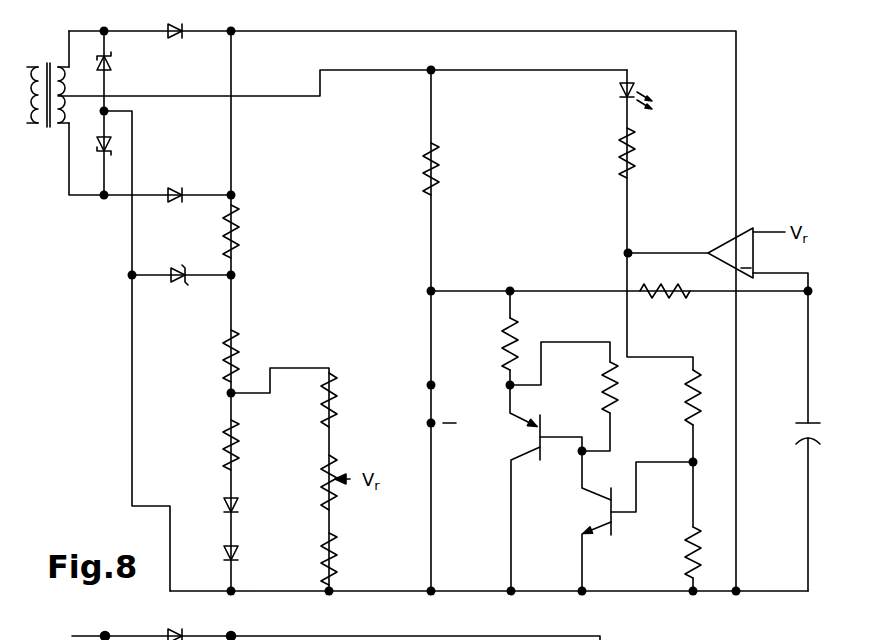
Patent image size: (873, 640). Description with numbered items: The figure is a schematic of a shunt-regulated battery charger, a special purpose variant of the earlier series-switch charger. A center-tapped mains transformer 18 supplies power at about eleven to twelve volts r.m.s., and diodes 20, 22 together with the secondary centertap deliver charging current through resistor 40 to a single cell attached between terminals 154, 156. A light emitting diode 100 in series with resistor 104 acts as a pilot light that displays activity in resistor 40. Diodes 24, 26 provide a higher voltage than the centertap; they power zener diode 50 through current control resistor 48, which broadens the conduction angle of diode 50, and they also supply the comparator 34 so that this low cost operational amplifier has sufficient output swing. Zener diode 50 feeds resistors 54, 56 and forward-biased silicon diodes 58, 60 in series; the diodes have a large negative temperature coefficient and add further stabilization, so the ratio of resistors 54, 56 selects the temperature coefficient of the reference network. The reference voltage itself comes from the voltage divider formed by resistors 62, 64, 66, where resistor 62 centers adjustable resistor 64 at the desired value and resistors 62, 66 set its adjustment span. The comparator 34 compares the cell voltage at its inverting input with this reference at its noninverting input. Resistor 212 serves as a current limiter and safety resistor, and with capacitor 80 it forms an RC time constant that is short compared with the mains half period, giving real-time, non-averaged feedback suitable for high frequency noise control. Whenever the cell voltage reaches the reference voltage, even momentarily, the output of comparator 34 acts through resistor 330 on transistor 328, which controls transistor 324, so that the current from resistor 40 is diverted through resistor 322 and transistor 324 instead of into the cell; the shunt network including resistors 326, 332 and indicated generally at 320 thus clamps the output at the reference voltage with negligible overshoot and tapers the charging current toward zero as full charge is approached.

The mains transformer 18 is at (50, 130).
The diode 20 is at (115, 63).
The diode 22 is at (99, 151).
The diode 24 is at (178, 38).
The diode 26 is at (177, 203).
The comparator 34 is at (712, 252).
The resistor 40 is at (423, 176).
The current control resistor 48 is at (244, 224).
The zener diode 50 is at (178, 283).
The resistor 54 is at (228, 350).
The resistor 56 is at (225, 441).
The diode 58 is at (223, 511).
The diode 60 is at (222, 557).
The resistor 62 is at (340, 400).
The resistor 64 is at (323, 464).
The resistor 66 is at (325, 537).
The capacitor 80 is at (803, 420).
The light emitting diode 100 is at (617, 95).
The resistor 104 is at (620, 152).
The terminal 154 is at (427, 389).
The terminal 156 is at (426, 420).
The resistor 212 is at (680, 298).
The current limiting circuit 320 is at (634, 596).
The resistor 322 is at (500, 345).
The transistor 324 is at (522, 448).
The resistor 326 is at (605, 395).
The transistor 328 is at (590, 523).
The resistor 330 is at (690, 385).
The resistor 332 is at (688, 560).